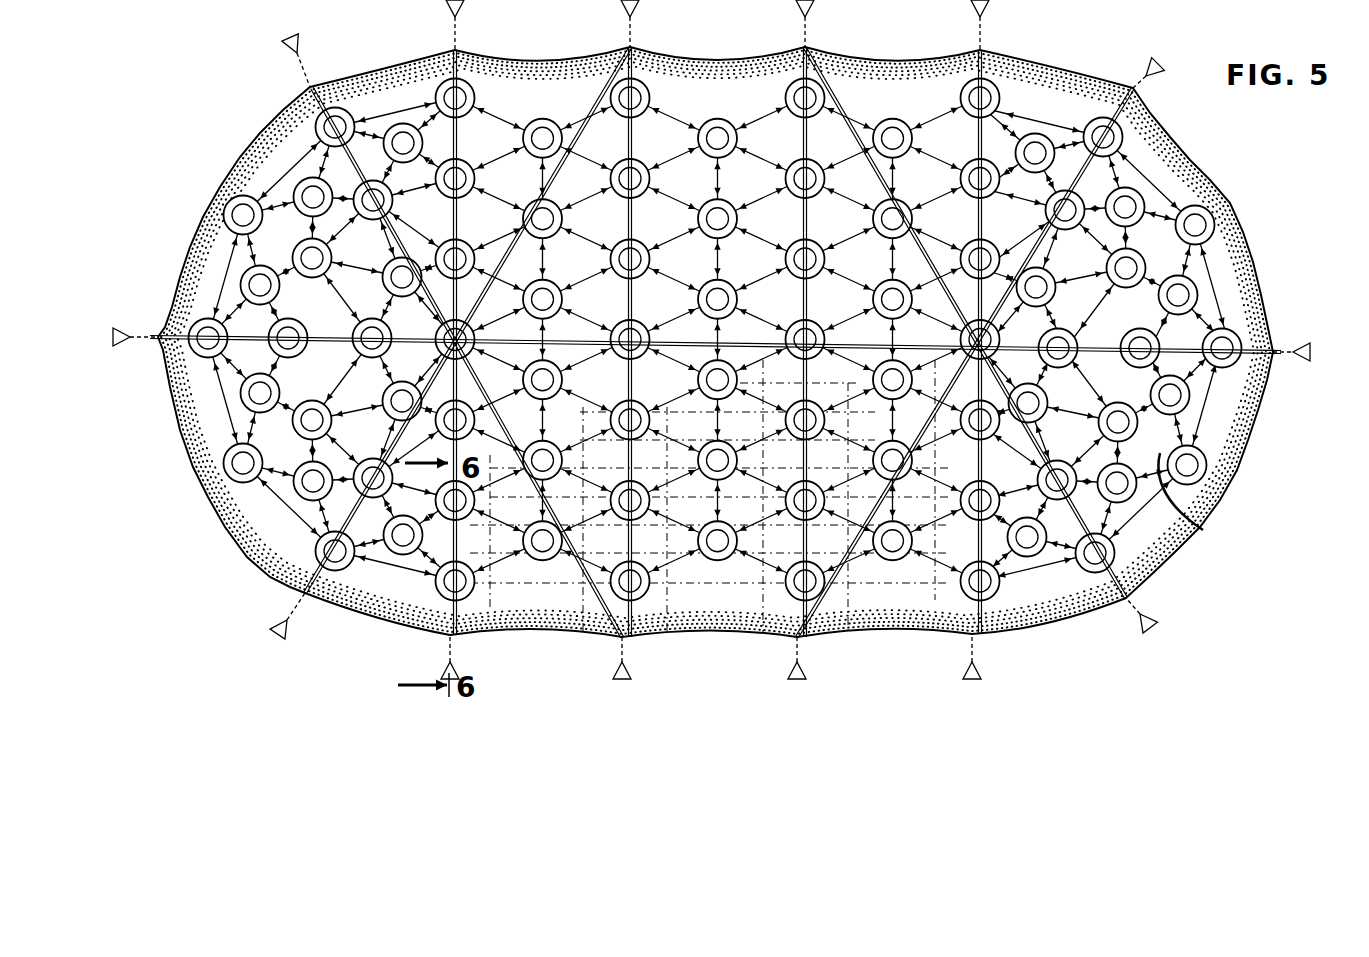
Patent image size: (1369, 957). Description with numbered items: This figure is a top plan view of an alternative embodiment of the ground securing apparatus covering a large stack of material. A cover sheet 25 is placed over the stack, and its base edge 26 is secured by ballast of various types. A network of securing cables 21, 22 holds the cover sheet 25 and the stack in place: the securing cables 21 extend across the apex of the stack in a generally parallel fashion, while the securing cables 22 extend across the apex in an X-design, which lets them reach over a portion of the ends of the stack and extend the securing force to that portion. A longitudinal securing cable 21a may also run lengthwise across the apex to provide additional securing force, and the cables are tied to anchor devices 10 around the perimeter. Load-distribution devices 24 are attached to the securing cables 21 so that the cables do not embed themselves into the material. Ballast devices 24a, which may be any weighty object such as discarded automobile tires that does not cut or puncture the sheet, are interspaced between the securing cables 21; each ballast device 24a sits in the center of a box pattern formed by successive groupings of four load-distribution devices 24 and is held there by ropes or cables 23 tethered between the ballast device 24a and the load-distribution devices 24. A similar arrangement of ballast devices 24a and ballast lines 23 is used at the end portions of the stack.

The anchor device 10 is at (436, 670).
The securing cables 21 is at (428, 582).
The longitudinal securing cable 21a is at (1266, 334).
The securing cables 22 is at (308, 595).
The ropes or cables 23 is at (1198, 519).
The load-distribution devices 24 is at (638, 520).
The ballast devices 24a is at (539, 560).
The cover sheet 25 is at (751, 577).
The base edge 26 is at (1250, 295).